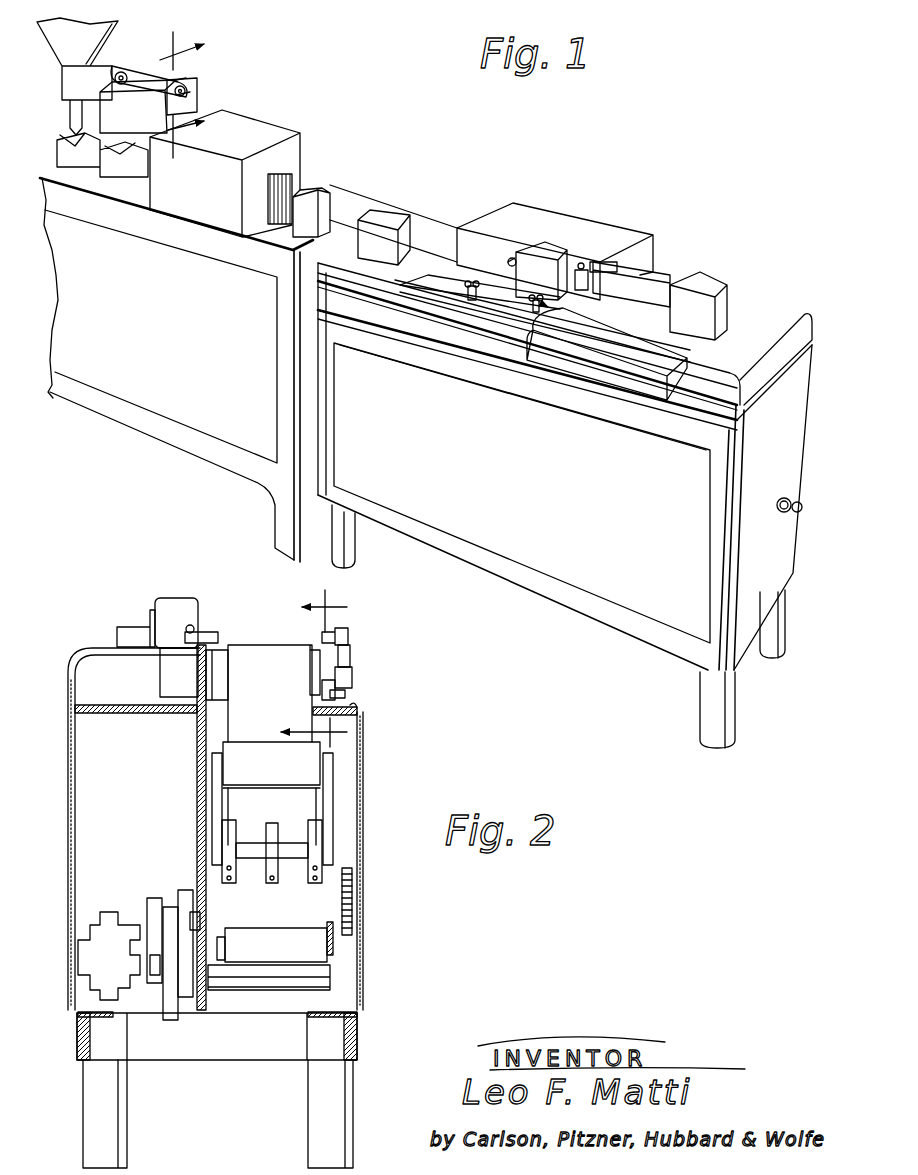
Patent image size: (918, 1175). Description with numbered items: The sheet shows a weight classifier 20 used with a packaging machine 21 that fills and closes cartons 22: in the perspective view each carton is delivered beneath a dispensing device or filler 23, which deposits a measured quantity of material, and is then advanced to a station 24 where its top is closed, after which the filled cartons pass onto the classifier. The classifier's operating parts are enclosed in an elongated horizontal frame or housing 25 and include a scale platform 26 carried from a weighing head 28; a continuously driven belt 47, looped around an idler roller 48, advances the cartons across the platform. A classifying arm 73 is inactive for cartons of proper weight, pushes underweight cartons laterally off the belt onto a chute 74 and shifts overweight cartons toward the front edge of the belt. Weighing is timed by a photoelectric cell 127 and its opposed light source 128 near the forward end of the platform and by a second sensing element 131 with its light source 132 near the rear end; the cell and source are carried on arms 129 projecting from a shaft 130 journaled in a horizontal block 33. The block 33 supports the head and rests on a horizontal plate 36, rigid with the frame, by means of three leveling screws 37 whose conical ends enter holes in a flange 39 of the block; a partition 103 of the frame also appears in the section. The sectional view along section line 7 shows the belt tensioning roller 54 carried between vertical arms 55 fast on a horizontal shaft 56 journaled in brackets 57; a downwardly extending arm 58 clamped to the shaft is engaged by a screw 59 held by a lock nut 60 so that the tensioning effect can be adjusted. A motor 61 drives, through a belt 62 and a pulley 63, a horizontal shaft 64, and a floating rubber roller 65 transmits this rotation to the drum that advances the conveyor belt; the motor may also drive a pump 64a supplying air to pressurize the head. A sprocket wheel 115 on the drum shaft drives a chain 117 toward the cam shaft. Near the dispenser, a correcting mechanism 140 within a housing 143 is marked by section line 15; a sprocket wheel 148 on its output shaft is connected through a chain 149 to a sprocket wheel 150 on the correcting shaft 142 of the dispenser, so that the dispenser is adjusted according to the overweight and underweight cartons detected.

In FIG. 1, the section line 15 is at (195, 88).
In FIG. 1, the weight classifier 20 is at (673, 266).
In FIG. 1, the packaging machine 21 is at (300, 110).
In FIG. 1, the cartons 22 is at (62, 140).
In FIG. 1, the dispensing device or filler 23 is at (112, 70).
In FIG. 1, the station 24 is at (316, 152).
In FIG. 1, the frame or housing 25 is at (559, 597).
In FIG. 2, the frame or housing 25 is at (363, 762).
In FIG. 1, the scale platform 26 is at (504, 300).
In FIG. 1, the belt 47 is at (427, 272).
In FIG. 2, the belt 47 is at (288, 646).
In FIG. 2, the idler roller 48 is at (229, 660).
In FIG. 1, the arm 73 is at (645, 293).
In FIG. 1, the chute 74 is at (568, 366).
In FIG. 1, the screw 59 is at (800, 511).
In FIG. 2, the screw 59 is at (271, 884).
In FIG. 1, the lock nut 60 is at (783, 513).
In FIG. 1, the sensing element 127 is at (510, 260).
In FIG. 2, the sensing element 127 is at (210, 629).
In FIG. 1, the light source 128 is at (472, 300).
In FIG. 2, the light source 128 is at (337, 628).
In FIG. 1, the second sensing element 131 is at (575, 273).
In FIG. 1, the light source 132 is at (538, 305).
In FIG. 1, the mechanism 140 is at (195, 88).
In FIG. 1, the correcting shaft 142 is at (112, 80).
In FIG. 1, the housing 143 is at (180, 74).
In FIG. 1, the sprocket wheel 148 is at (190, 95).
In FIG. 1, the chain 149 is at (148, 78).
In FIG. 1, the sprocket wheel 150 is at (128, 86).
In FIG. 2, the weighing head 28 is at (170, 600).
In FIG. 2, the section line 7 is at (316, 672).
In FIG. 2, the arms 129 is at (350, 652).
In FIG. 2, the shaft 130 is at (351, 668).
In FIG. 2, the horizontal block 33 is at (336, 684).
In FIG. 2, the flange 39 is at (346, 696).
In FIG. 2, the screws 37 is at (357, 709).
In FIG. 2, the horizontal plate 36 is at (146, 713).
In FIG. 2, the roller 54 is at (227, 752).
In FIG. 2, the arms 55 is at (216, 782).
In FIG. 2, the partition 103 is at (199, 818).
In FIG. 2, the brackets 57 is at (233, 838).
In FIG. 2, the horizontal shaft 56 is at (303, 842).
In FIG. 2, the arm 58 is at (266, 874).
In FIG. 2, the motor 61 is at (190, 892).
In FIG. 2, the belt 62 is at (162, 982).
In FIG. 2, the pulley 63 is at (179, 1012).
In FIG. 2, the horizontal shaft 64 is at (274, 972).
In FIG. 2, the pump 64a is at (113, 918).
In FIG. 2, the rubber roller 65 is at (295, 940).
In FIG. 2, the sprocket wheel 115 is at (335, 923).
In FIG. 2, the chain 117 is at (353, 889).